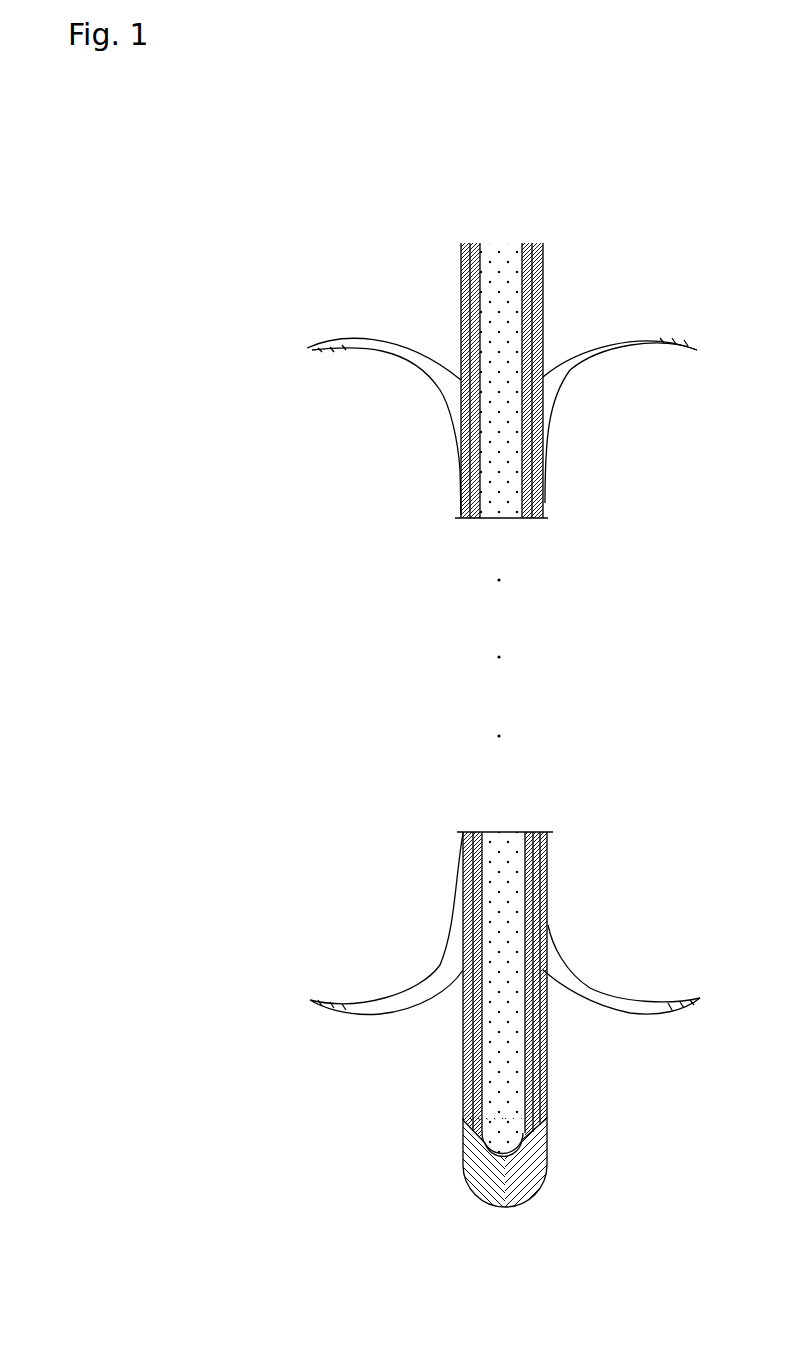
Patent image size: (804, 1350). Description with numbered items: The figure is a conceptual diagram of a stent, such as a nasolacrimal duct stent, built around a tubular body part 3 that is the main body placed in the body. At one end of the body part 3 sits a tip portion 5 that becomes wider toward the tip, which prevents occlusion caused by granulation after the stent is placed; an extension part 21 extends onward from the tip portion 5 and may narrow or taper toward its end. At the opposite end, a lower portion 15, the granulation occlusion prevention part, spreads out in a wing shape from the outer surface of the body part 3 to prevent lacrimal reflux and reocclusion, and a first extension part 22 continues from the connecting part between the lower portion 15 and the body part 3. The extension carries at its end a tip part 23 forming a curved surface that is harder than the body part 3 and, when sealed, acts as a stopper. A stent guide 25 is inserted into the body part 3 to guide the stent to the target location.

The body part 3 is at (561, 370).
The tip portion 5 is at (678, 338).
The extension part 21 is at (543, 320).
The lower portion 15 is at (565, 968).
The first extension part 22 is at (461, 1030).
The tip part 23 is at (540, 1177).
The stent guide 25 is at (500, 927).